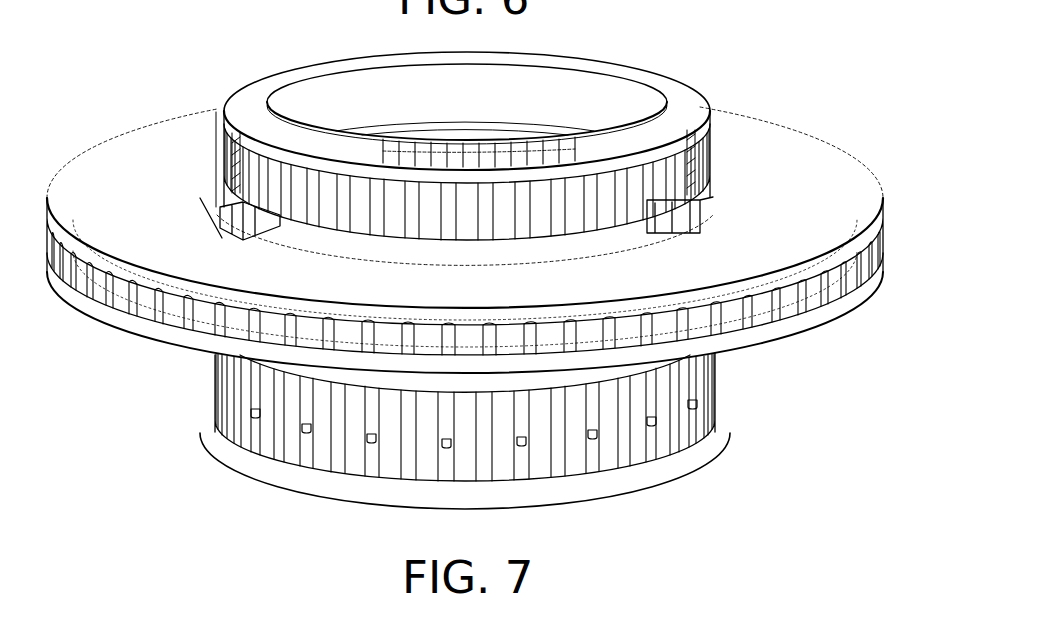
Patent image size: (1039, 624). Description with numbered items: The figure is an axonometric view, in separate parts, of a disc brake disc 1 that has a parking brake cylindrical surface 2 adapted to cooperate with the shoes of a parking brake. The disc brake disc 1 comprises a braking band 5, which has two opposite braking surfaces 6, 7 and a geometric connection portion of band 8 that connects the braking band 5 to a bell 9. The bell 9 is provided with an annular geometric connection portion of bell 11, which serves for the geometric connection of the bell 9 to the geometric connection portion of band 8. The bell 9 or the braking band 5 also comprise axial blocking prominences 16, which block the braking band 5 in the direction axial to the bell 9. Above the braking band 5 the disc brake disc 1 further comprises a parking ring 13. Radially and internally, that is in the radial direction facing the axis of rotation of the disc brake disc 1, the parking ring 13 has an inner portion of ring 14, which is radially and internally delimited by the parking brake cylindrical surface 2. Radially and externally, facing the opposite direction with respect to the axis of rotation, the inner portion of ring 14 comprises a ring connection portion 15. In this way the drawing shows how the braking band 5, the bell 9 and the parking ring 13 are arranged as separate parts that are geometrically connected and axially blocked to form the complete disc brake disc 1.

The disc brake disc 1 is at (790, 98).
The parking brake cylindrical surface 2 is at (580, 100).
The braking band 5 is at (810, 167).
The braking surface 6 is at (827, 210).
The braking surface 7 is at (813, 323).
The geometric connection portion of band 8 is at (717, 207).
The bell 9 is at (680, 417).
The annular geometric connection portion of bell 11 is at (267, 415).
The parking ring 13 is at (673, 138).
The inner portion of ring 14 is at (265, 120).
The ring connection portion 15 is at (217, 173).
The axial blocking prominences 16 is at (365, 442).